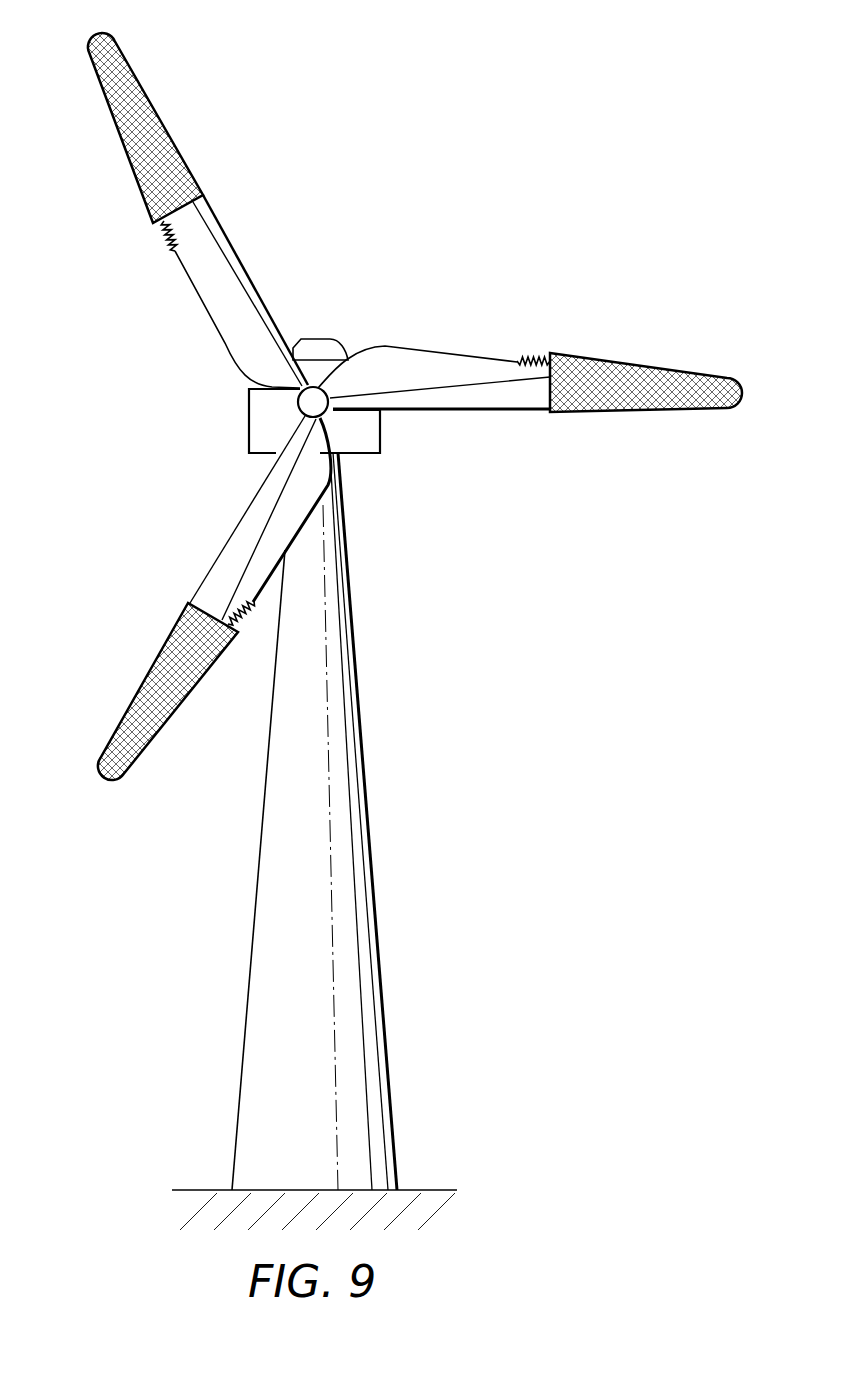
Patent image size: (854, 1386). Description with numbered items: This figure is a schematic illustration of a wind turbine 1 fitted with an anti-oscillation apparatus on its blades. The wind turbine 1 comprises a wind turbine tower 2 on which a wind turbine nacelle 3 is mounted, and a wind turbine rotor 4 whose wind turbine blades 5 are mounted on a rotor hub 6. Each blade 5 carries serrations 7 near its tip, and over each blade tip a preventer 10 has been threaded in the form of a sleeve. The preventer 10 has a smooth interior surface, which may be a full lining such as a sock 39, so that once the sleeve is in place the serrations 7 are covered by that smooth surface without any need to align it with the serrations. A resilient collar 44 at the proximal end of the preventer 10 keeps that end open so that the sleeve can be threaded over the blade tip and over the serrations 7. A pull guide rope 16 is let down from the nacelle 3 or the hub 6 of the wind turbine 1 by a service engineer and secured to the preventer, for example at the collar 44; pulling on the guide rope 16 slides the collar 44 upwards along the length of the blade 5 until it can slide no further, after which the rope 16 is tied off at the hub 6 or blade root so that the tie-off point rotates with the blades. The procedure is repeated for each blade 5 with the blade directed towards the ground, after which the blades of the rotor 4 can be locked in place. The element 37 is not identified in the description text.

The wind turbine 1 is at (90, 1036).
The wind turbine tower 2 is at (258, 870).
The wind turbine nacelle 3 is at (375, 435).
The wind turbine rotor 4 is at (422, 212).
The wind turbine blade 5 is at (448, 365).
The rotor hub 6 is at (318, 395).
The serrations 7 is at (162, 235).
The preventer 10 is at (170, 101).
The pull guide rope 16 is at (262, 520).
The blade body 37 is at (697, 383).
The sock 39 is at (613, 400).
The resilient collar 44 is at (548, 353).